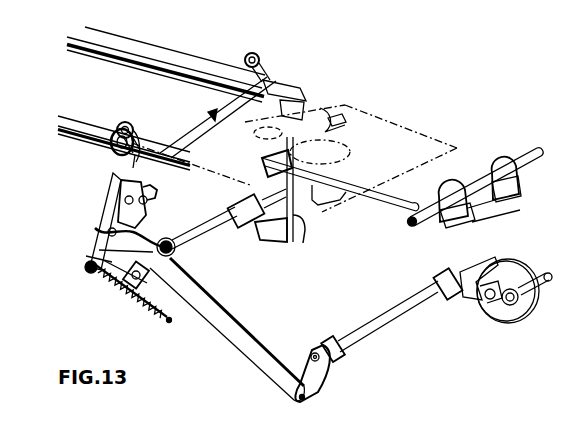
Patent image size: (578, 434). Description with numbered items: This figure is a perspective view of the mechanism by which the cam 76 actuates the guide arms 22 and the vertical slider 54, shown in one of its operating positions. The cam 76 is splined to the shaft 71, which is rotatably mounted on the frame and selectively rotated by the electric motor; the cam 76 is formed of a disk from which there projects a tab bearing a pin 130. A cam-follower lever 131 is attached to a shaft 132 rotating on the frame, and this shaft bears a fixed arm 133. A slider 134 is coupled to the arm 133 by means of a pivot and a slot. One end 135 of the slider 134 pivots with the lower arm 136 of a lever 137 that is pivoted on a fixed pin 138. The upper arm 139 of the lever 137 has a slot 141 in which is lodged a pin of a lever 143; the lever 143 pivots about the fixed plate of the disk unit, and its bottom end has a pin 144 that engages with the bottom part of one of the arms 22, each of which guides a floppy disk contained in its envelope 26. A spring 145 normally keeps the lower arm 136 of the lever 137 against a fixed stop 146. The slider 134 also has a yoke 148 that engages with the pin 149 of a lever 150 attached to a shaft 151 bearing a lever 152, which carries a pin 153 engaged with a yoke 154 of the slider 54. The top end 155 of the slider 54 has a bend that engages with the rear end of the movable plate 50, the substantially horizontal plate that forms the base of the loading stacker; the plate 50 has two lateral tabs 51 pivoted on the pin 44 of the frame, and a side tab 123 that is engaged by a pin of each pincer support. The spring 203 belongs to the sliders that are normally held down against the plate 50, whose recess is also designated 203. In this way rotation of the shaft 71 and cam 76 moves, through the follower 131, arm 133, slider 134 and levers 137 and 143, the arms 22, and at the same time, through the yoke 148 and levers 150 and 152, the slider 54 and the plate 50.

The guide arm 22 is at (83, 120).
The envelope 26 is at (346, 106).
The pin 44 is at (523, 157).
The plate 50 is at (463, 160).
The lateral tab 51 is at (503, 187).
The vertical slider 54 is at (317, 220).
The shaft 71 is at (546, 274).
The cam 76 is at (510, 273).
The side tab 123 is at (378, 117).
The pin 130 is at (480, 300).
The cam-follower lever 131 is at (470, 267).
The shaft 132 is at (383, 320).
The fixed arm 133 is at (323, 377).
The slider 134 is at (252, 347).
The end of slider 135 is at (108, 228).
The lower arm 136 is at (108, 235).
The lever 137 is at (140, 234).
The fixed pin 138 is at (147, 201).
The upper arm 139 is at (120, 181).
The slot 141 is at (120, 157).
The lever 143 is at (262, 60).
The pin 144 is at (150, 185).
The spring 145 is at (123, 291).
The fixed stop 146 is at (85, 264).
The yoke 148 is at (175, 262).
The pin 149 is at (176, 252).
The lever 150 is at (150, 303).
The shaft 151 is at (120, 280).
The lever 152 is at (253, 177).
The flange 153 is at (267, 237).
The yoke 154 is at (297, 238).
The top end of slider 155 is at (340, 147).
The spring 203 is at (336, 120).